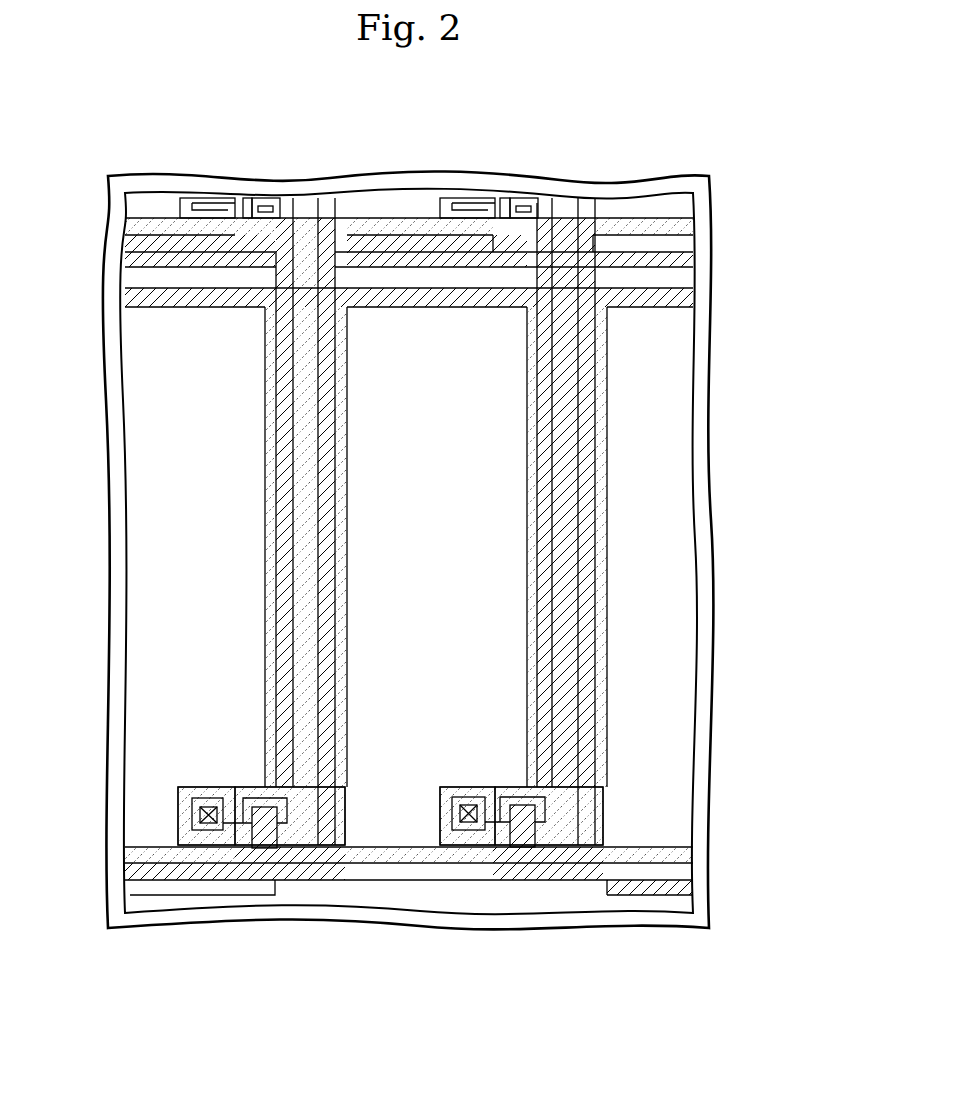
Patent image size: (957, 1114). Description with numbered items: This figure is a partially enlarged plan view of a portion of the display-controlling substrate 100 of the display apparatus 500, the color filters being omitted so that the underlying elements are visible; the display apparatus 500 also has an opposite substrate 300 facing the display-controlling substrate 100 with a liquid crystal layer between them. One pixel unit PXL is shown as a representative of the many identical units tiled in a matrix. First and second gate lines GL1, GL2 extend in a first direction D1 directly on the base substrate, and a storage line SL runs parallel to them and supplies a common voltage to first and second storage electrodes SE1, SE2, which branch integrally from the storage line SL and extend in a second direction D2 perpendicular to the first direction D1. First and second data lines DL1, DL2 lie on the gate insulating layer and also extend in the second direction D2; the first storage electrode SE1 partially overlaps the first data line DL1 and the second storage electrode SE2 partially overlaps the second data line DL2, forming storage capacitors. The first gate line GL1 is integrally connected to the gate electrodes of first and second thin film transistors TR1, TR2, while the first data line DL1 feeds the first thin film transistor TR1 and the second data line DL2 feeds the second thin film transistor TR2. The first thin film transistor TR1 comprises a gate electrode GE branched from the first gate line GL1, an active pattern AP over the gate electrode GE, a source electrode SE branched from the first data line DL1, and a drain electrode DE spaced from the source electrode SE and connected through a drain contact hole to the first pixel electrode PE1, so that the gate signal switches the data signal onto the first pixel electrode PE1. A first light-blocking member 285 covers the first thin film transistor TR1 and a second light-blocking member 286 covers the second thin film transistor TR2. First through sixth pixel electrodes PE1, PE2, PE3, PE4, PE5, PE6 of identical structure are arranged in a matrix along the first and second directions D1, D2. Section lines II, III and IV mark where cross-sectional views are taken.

The display-controlling substrate 100 is at (683, 584).
The opposite substrate 300 is at (709, 502).
The display apparatus 500 is at (790, 495).
The first gate line GL1 is at (667, 847).
The second gate line GL2 is at (693, 222).
The storage line SL is at (693, 297).
The first data line DL1 is at (572, 900).
The second data line DL2 is at (305, 900).
The first storage electrode SE1 is at (540, 505).
The second storage electrode SE2 is at (290, 505).
The first pixel electrode PE1 is at (402, 233).
The second pixel electrode PE2 is at (203, 230).
The third pixel electrode PE3 is at (632, 250).
The fourth pixel electrode PE4 is at (330, 880).
The fifth pixel electrode PE5 is at (130, 872).
The sixth pixel electrode PE6 is at (678, 880).
The first thin film transistor TR1 is at (504, 880).
The second thin film transistor TR2 is at (252, 863).
The first light-blocking member 285 is at (455, 790).
The second light-blocking member 286 is at (200, 790).
The drain electrode DE is at (462, 830).
The gate electrode GE is at (515, 835).
The active pattern AP is at (535, 848).
The source electrode SE is at (545, 855).
The pixel unit PXL is at (486, 1030).
The section line IV-IV' IV is at (631, 418).
The section line II-II' II is at (562, 825).
The section line III-III' III is at (152, 900).
The first direction D1 is at (642, 973).
The second direction D2 is at (642, 973).